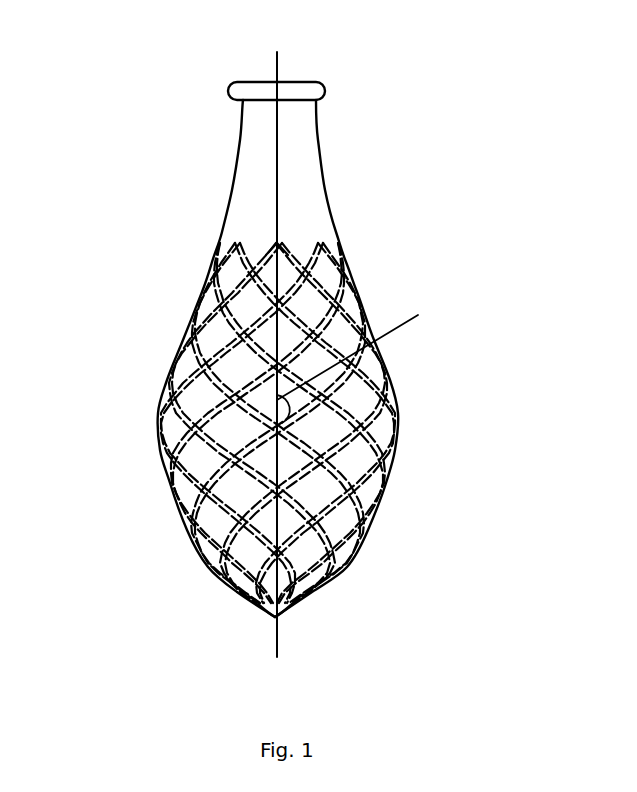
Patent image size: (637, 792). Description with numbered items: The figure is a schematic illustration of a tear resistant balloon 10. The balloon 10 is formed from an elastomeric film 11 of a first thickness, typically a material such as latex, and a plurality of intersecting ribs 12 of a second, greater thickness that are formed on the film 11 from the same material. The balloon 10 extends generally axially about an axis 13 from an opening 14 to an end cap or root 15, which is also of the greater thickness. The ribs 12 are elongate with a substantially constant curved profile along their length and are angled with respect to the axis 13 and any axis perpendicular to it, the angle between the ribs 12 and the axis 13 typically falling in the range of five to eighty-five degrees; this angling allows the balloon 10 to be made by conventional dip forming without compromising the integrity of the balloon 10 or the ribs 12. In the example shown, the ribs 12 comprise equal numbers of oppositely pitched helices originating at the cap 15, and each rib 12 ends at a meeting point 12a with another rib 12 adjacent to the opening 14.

The tear resistant balloon 10 is at (158, 293).
The film 11 is at (330, 430).
The intersecting ribs 12 is at (200, 382).
The meeting point 12a is at (283, 244).
The axis 13 is at (281, 62).
The opening 14 is at (227, 88).
The end cap or root 15 is at (283, 600).